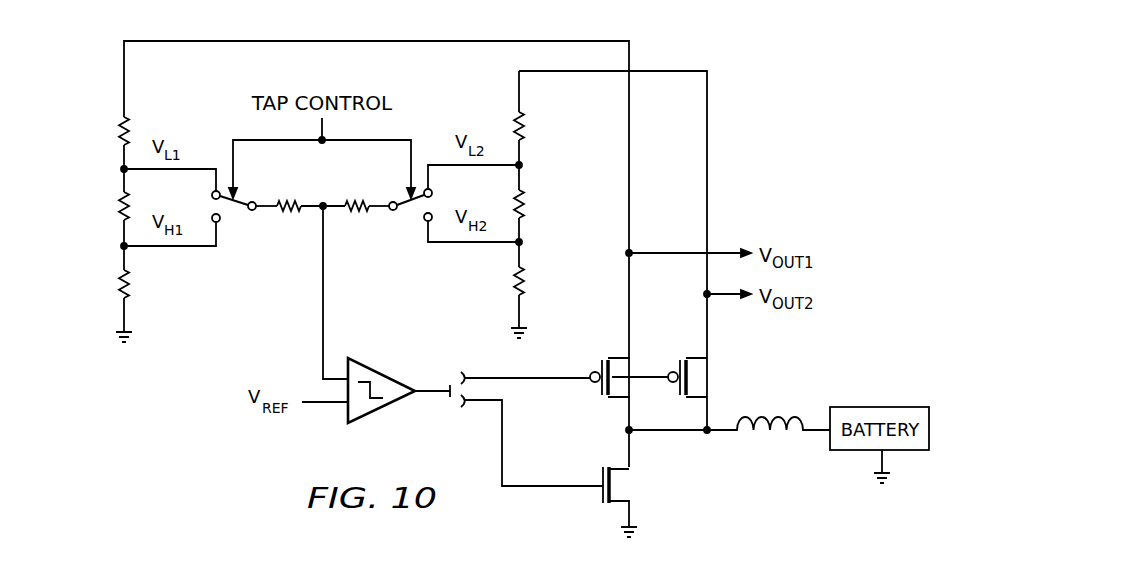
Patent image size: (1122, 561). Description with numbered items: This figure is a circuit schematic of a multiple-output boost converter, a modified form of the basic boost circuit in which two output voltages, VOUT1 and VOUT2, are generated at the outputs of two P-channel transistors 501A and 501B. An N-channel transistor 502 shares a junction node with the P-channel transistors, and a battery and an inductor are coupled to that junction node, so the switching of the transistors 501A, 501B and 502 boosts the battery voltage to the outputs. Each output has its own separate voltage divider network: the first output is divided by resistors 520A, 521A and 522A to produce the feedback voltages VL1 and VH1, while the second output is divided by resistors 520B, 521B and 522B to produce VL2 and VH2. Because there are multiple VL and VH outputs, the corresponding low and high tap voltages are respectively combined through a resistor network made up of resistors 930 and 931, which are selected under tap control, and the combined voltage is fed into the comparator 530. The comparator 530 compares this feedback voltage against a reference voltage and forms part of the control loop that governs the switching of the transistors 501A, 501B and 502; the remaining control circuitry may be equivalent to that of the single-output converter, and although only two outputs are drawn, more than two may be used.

The voltage divider resistor 520A is at (118, 130).
The voltage divider resistor 521A is at (118, 207).
The voltage divider resistor 522A is at (118, 283).
The voltage divider resistor 520B is at (525, 128).
The voltage divider resistor 521B is at (526, 205).
The voltage divider resistor 522B is at (525, 283).
The resistor 930 is at (292, 220).
The resistor 931 is at (358, 220).
The comparator 530 is at (382, 372).
The P-channel transistor 501A is at (600, 388).
The P-channel transistor 501B is at (672, 362).
The N-channel transistor 502 is at (601, 496).